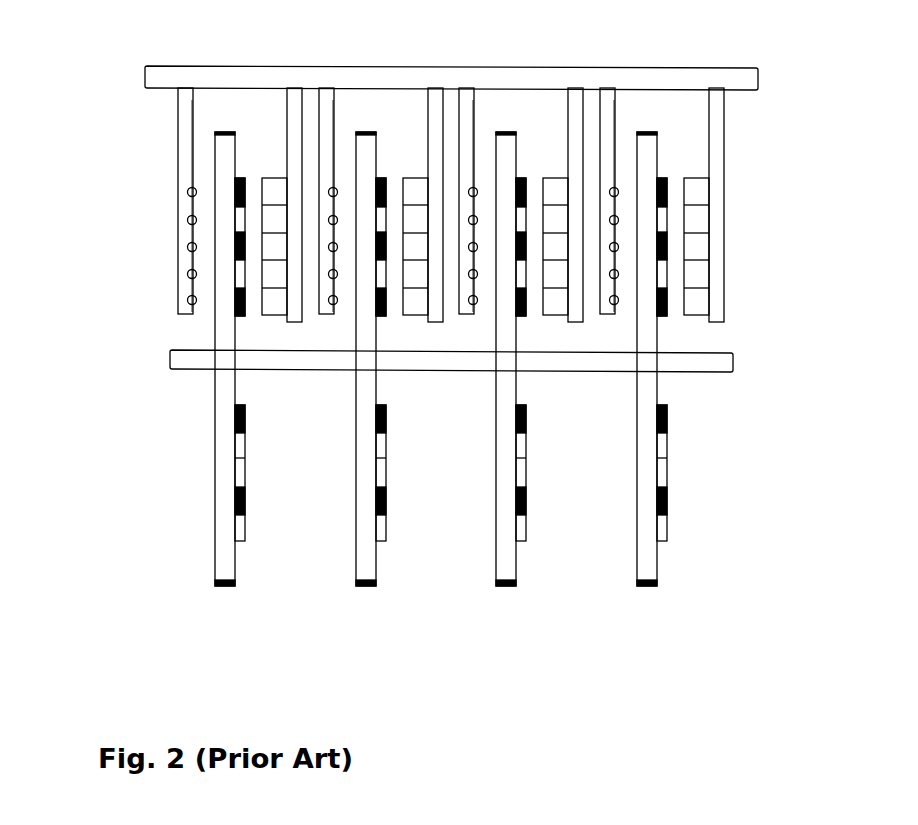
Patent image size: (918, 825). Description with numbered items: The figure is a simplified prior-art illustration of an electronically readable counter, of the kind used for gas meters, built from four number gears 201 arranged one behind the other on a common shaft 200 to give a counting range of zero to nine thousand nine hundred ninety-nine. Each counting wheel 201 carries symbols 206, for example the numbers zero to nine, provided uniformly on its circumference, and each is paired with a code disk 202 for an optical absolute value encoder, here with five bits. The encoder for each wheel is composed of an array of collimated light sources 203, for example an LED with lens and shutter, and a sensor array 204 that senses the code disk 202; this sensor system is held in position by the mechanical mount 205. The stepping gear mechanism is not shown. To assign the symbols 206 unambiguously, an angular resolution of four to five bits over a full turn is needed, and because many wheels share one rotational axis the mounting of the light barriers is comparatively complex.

The common shaft 200 is at (168, 363).
The counting wheel 201 is at (637, 580).
The code disk 202 is at (638, 538).
The array of collimated light sources 203 is at (188, 192).
The sensor array 204 is at (270, 192).
The mechanical mount 205 is at (165, 75).
The symbols 206 is at (213, 492).